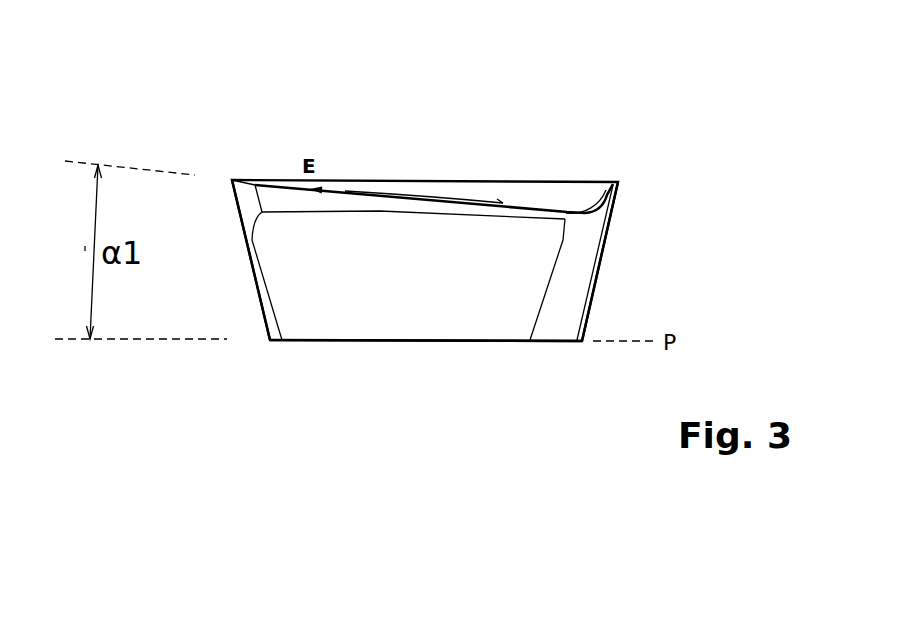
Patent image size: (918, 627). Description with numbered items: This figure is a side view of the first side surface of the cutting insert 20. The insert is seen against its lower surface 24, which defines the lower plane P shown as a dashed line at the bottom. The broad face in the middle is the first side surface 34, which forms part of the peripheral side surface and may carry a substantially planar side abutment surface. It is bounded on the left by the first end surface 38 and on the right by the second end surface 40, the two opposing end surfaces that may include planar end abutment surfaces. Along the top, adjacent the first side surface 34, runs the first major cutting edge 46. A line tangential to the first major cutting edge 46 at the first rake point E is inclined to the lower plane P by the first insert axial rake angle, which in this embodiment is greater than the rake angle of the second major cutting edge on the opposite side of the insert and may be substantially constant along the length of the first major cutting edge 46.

The cutting insert 20 is at (650, 187).
The lower surface 24 is at (430, 342).
The first side surface 34 is at (395, 285).
The first end surface 38 is at (253, 272).
The second end surface 40 is at (600, 275).
The first major cutting edge 46 is at (373, 195).